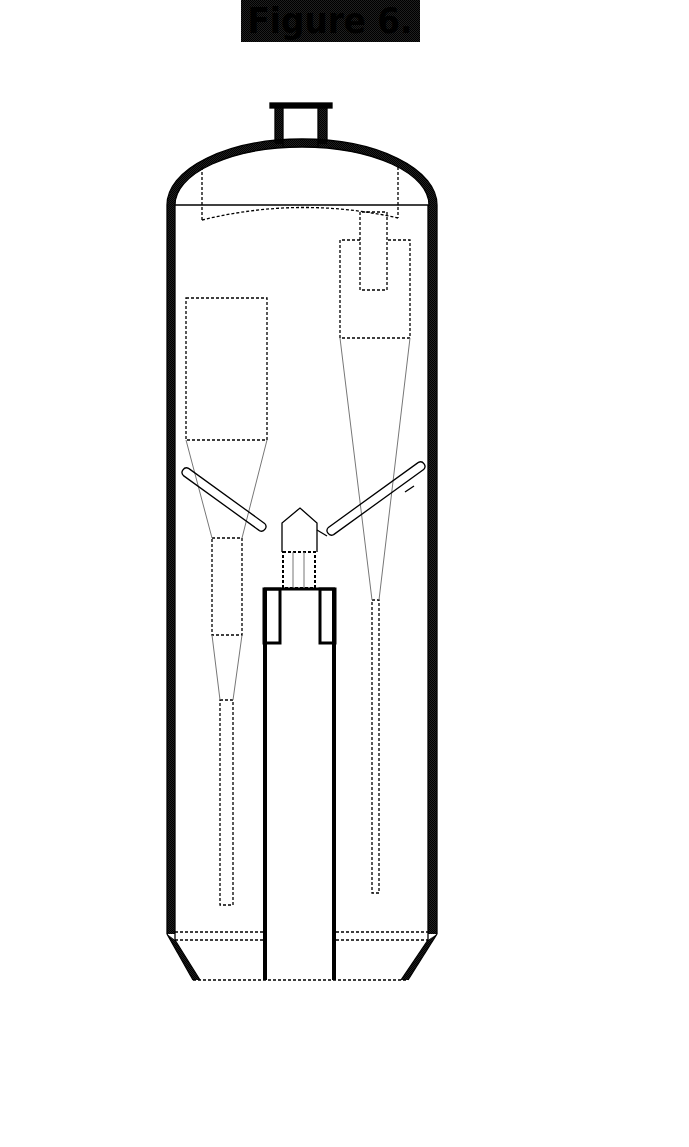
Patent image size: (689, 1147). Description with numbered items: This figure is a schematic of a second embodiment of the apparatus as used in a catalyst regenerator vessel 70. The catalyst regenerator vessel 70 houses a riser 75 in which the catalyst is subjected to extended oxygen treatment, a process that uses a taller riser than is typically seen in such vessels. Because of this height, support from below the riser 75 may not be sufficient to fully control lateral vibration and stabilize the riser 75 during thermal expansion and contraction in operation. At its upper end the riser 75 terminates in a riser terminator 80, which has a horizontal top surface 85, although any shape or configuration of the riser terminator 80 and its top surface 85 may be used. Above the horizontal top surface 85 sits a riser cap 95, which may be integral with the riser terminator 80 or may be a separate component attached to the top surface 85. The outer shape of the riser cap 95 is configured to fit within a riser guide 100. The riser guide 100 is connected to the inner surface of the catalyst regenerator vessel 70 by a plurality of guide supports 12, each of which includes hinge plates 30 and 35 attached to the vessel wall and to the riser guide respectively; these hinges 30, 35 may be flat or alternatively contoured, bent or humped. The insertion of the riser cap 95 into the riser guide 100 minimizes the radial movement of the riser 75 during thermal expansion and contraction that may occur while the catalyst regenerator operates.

The catalyst regenerator vessel 70 is at (431, 226).
The riser guide 100 is at (310, 520).
The hinge plate 30 is at (423, 464).
The guide support 12 is at (404, 492).
The hinge plate 35 is at (327, 533).
The riser cap 95 is at (299, 569).
The horizontal top surface 85 is at (275, 587).
The riser terminator 80 is at (299, 618).
The riser 75 is at (303, 712).